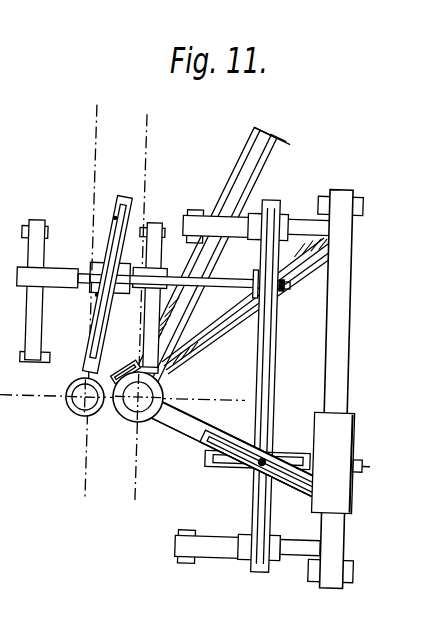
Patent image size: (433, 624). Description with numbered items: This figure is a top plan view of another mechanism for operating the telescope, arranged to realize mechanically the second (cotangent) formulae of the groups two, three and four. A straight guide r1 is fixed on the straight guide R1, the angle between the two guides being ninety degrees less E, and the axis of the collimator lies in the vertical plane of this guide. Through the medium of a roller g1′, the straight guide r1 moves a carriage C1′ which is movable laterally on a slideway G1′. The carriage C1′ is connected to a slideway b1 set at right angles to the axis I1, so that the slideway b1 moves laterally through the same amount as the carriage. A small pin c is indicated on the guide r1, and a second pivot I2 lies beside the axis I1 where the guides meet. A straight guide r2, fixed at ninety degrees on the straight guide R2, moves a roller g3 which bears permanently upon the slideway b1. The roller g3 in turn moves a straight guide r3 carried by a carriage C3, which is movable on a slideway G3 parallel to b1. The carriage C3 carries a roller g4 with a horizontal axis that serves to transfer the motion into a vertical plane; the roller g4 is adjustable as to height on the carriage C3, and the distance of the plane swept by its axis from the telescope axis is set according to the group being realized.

The straight guide r1 is at (114, 200).
The pin c is at (110, 221).
The carriage C1′ is at (94, 271).
The slideway G1′ is at (77, 254).
The roller g1′ is at (94, 298).
The axis I1 is at (83, 401).
The bell crank pivot I2 is at (218, 436).
The straight guide r2 is at (203, 433).
The straight guide r3 is at (224, 464).
The roller g3 is at (262, 462).
The slideway b1 is at (262, 518).
The straight guide R2 is at (236, 176).
The straight guide R1 is at (200, 315).
The slideway G3 is at (338, 326).
The carriage C3 is at (347, 463).
The roller g4 is at (372, 462).